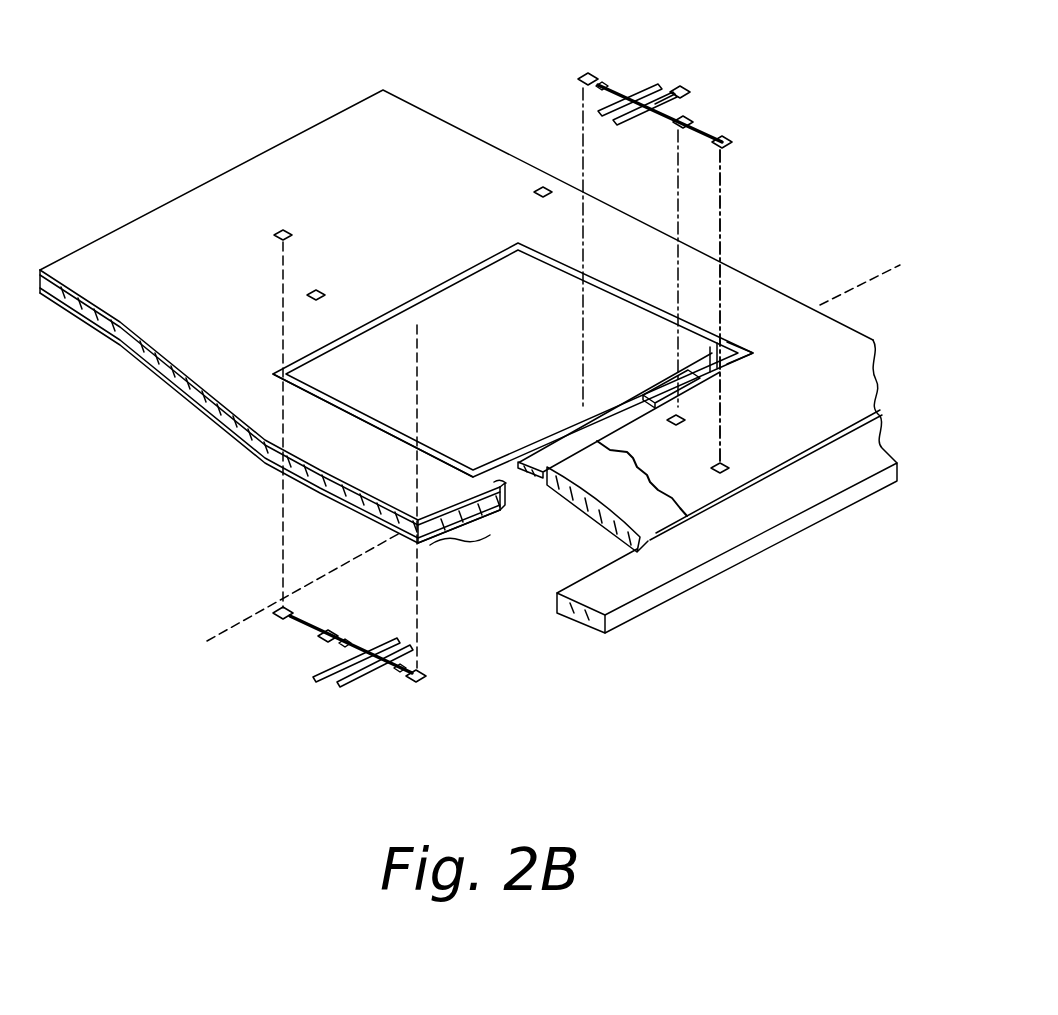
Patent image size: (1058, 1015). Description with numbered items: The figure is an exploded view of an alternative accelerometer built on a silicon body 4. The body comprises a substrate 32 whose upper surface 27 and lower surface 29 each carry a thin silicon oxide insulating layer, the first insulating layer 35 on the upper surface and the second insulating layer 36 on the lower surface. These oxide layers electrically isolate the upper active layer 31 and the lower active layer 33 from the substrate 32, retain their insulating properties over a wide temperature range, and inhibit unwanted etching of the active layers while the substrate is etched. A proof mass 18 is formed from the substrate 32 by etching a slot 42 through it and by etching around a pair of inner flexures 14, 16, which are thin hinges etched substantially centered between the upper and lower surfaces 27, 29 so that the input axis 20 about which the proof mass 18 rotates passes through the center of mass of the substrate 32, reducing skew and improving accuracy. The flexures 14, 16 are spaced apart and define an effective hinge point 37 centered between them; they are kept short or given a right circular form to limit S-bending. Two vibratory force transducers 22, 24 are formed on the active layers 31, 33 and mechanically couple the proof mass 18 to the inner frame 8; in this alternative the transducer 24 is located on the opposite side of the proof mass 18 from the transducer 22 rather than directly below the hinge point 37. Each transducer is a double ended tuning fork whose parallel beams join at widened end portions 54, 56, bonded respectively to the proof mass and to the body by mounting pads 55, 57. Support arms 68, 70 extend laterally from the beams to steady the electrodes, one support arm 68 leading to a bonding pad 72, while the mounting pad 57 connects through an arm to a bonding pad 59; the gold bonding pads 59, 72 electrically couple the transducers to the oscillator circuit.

The silicon body 4 is at (758, 285).
The inner frame 8 is at (613, 238).
The inner flexure 14 is at (705, 385).
The inner flexure 16 is at (553, 445).
The proof mass 18 is at (505, 364).
The input axis 20 is at (541, 462).
The vibratory force transducer 22 is at (700, 54).
The vibratory force transducer 24 is at (262, 668).
The upper surface 27 is at (490, 490).
The lower surface 29 is at (455, 520).
The upper active layer 31 is at (780, 135).
The lower active layer 33 is at (468, 700).
The substrate 32 is at (205, 405).
The first insulating layer 35 is at (248, 170).
The second insulating layer 36 is at (278, 475).
The effective hinge point 37 is at (633, 418).
The slot 42 is at (352, 405).
The widened end portion 54 is at (350, 640).
The mounting pad 55 is at (690, 118).
The widened end portion 56 is at (605, 82).
The mounting pad 57 is at (590, 74).
The bonding pad 59 is at (288, 230).
The support arm 68 is at (622, 123).
The support arm 70 is at (600, 110).
The bonding pad 72 is at (318, 290).